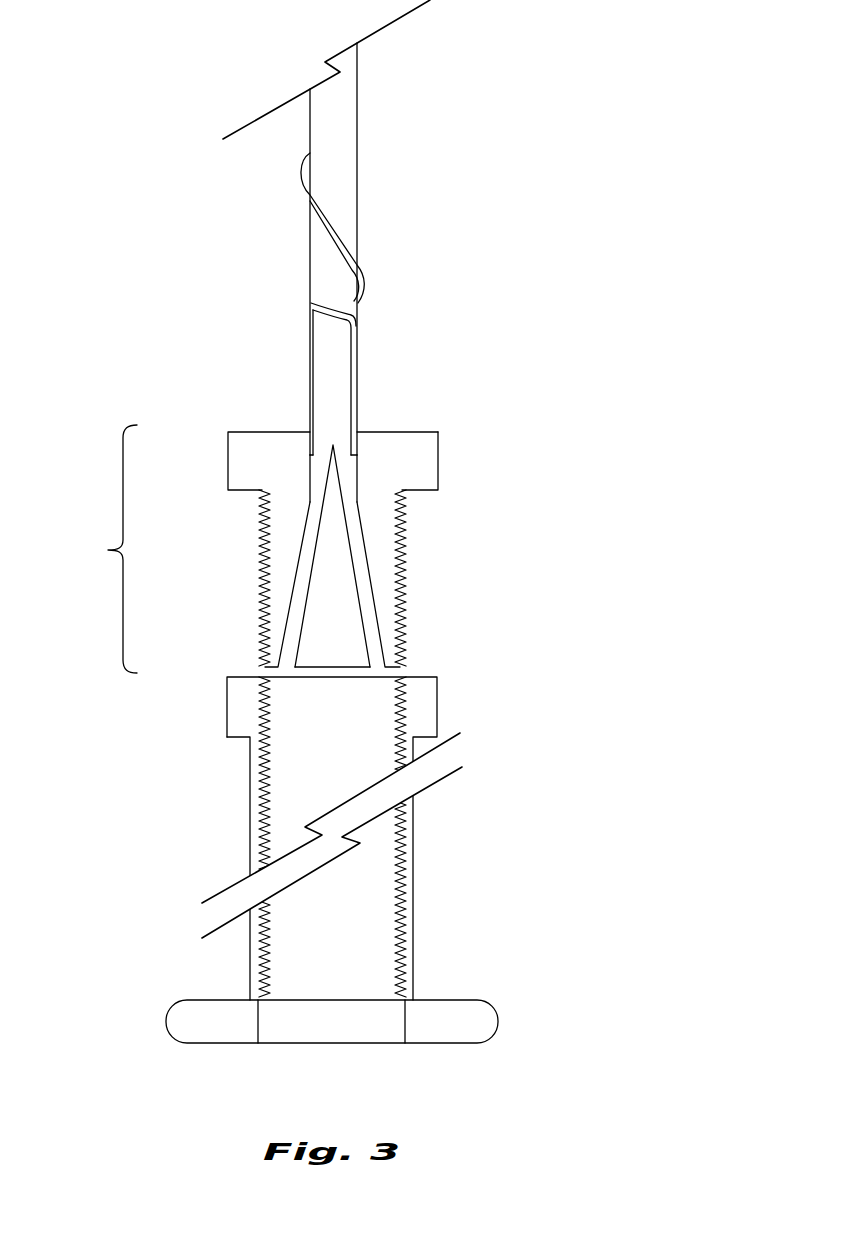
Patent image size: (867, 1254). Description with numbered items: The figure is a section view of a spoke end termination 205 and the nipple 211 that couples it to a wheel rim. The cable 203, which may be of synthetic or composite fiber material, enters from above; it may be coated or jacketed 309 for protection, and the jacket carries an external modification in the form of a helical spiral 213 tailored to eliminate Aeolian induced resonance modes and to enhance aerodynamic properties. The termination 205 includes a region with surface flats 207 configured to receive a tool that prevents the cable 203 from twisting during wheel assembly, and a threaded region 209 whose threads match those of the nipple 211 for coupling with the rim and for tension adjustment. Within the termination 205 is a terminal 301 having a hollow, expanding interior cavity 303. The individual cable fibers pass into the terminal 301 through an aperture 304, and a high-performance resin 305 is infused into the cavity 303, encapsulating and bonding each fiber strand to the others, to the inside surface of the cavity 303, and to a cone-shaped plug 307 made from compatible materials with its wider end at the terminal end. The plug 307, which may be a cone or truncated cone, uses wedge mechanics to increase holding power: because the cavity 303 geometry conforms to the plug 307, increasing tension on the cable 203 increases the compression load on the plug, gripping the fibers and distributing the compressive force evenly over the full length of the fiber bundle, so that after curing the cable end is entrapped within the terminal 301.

The cable 203 is at (358, 180).
The helical spiral 213 is at (302, 176).
The jacket 309 is at (358, 365).
The aperture 304 is at (358, 430).
The interior cavity 303 is at (347, 470).
The surface flats 207 is at (228, 457).
The threaded region 209 is at (262, 570).
The terminal 301 is at (402, 492).
The resin 305 is at (362, 563).
The cone-shaped plug 307 is at (358, 653).
The end termination 205 is at (225, 549).
The nipple 211 is at (250, 790).